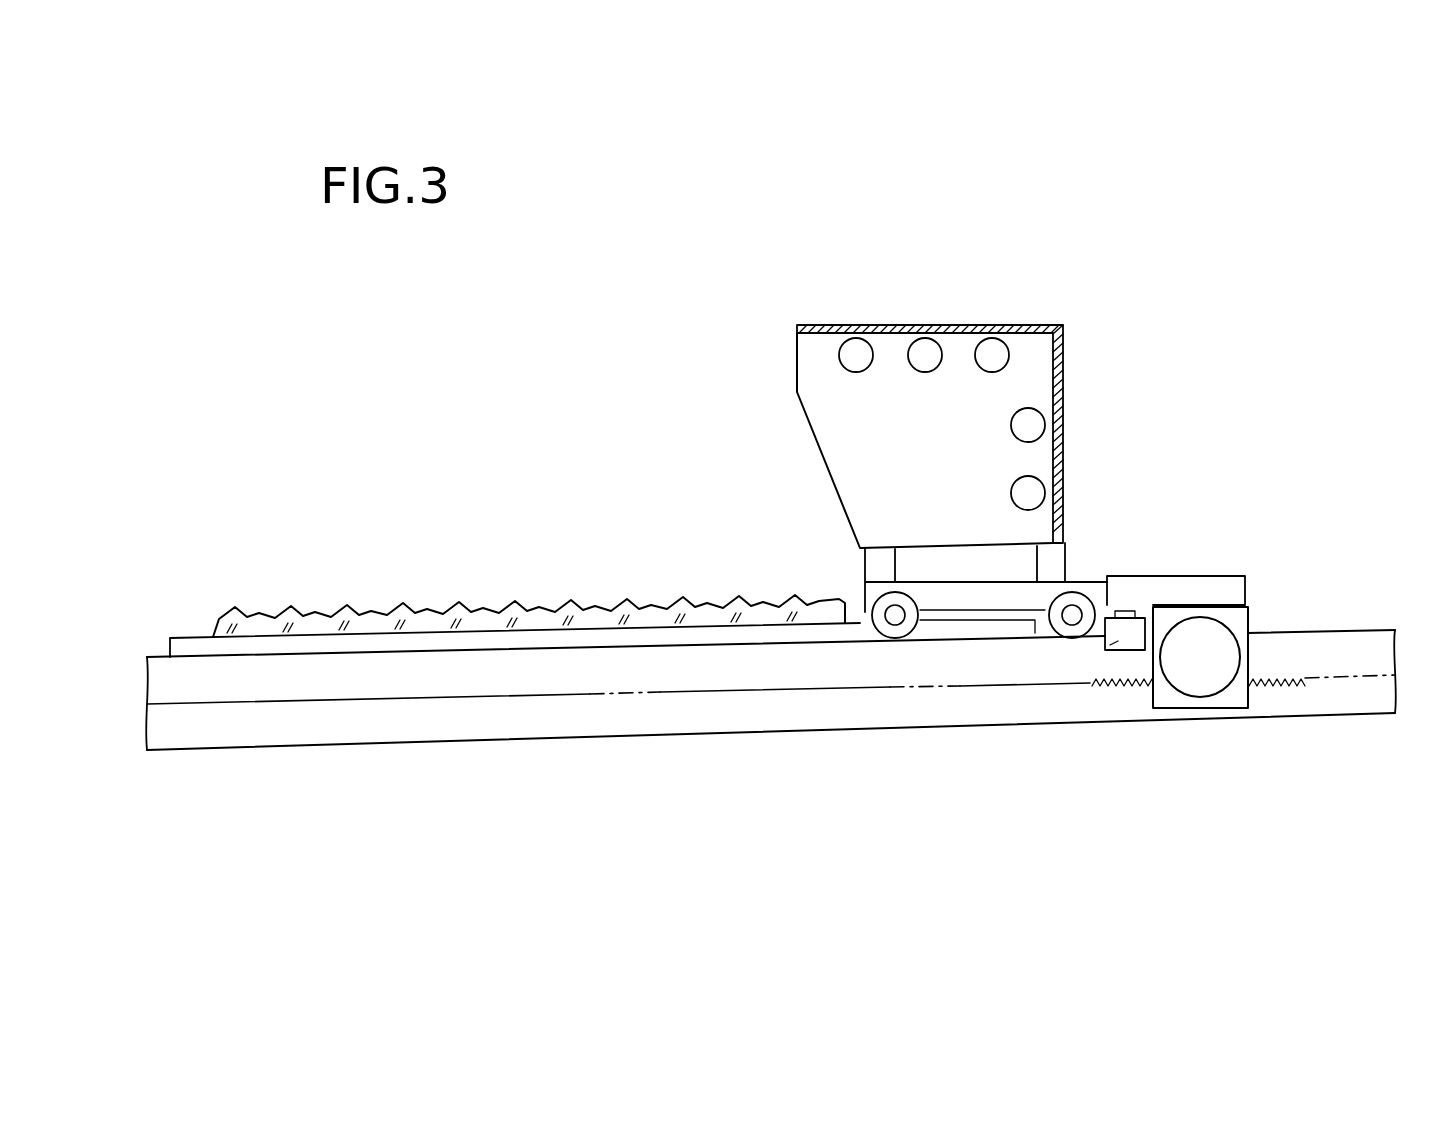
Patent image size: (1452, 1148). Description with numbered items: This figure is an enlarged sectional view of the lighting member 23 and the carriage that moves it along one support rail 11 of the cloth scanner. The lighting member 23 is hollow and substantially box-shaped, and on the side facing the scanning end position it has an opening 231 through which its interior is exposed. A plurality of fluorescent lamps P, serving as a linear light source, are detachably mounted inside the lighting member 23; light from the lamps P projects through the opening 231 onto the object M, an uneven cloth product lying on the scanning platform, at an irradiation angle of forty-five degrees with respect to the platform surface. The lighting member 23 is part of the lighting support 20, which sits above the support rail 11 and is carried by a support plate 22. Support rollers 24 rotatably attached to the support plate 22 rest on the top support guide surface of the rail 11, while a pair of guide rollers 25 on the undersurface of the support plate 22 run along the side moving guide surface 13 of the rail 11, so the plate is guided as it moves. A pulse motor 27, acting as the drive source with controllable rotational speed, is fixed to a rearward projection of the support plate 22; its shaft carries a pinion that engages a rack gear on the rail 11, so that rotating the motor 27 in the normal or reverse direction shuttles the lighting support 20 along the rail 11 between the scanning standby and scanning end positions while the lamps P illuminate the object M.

The support rail 11 is at (1365, 647).
The moving guide surface 13 is at (1350, 703).
The lighting support 20 is at (953, 392).
The support plate 22 is at (1200, 590).
The lighting member 23 is at (1065, 372).
The opening 231 is at (835, 449).
The support roller 24 is at (895, 615).
The guide roller 25 is at (1105, 640).
The pulse motor 27 is at (1230, 627).
The fluorescent lamp P is at (860, 345).
The object M is at (460, 610).